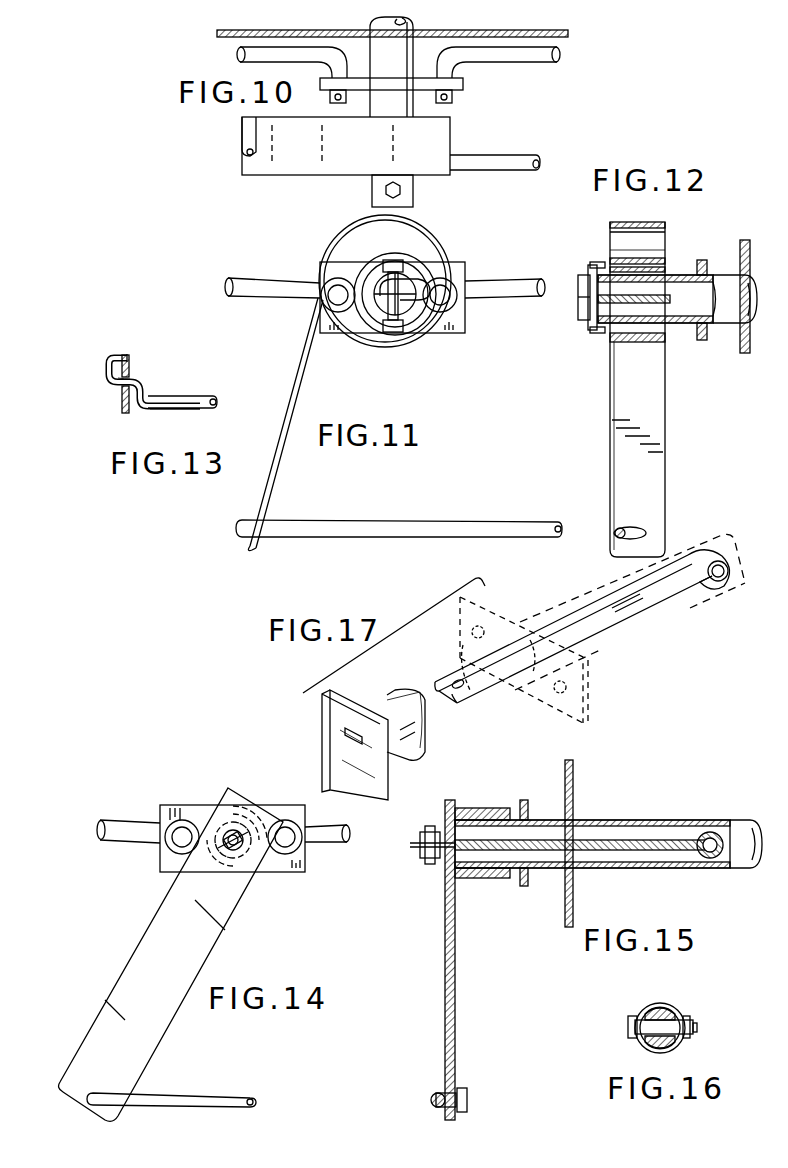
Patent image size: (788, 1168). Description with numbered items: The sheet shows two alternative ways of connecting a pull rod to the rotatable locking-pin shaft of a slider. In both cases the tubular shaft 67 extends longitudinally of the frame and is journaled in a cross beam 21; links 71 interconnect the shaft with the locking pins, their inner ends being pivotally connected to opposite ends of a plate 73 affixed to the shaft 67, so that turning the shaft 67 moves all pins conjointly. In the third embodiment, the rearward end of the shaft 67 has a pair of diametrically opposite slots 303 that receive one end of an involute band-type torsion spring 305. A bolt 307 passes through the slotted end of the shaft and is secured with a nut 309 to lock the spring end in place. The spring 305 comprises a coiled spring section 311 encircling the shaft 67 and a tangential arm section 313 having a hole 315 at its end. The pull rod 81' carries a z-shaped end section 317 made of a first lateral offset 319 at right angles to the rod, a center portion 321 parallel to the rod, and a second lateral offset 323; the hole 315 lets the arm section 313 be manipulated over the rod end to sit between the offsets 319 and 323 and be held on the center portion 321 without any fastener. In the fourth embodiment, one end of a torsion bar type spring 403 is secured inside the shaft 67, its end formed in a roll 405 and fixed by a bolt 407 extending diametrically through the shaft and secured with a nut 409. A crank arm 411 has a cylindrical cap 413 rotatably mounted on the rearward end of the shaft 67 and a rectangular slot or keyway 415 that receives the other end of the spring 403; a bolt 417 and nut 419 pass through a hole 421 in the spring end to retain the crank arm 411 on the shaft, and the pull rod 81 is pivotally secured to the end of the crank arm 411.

In FIG. 10, the cross beam 21 is at (555, 35).
In FIG. 12, the cross beam 21 is at (745, 353).
In FIG. 17, the cross beam 21 is at (575, 792).
In FIG. 15, the cross beam 21 is at (574, 792).
In FIG. 10, the shaft 67 is at (395, 40).
In FIG. 17, the shaft 67 is at (598, 652).
In FIG. 15, the shaft 67 is at (628, 820).
In FIG. 16, the shaft 67 is at (662, 1003).
In FIG. 10, the link 71 is at (238, 53).
In FIG. 11, the link 71 is at (266, 280).
In FIG. 14, the link 71 is at (124, 820).
In FIG. 10, the plate 73 is at (460, 86).
In FIG. 11, the plate 73 is at (460, 320).
In FIG. 12, the plate 73 is at (702, 340).
In FIG. 17, the plate 73 is at (582, 716).
In FIG. 14, the plate 73 is at (172, 805).
In FIG. 15, the plate 73 is at (526, 886).
In FIG. 14, the pull rod 81 is at (171, 1083).
In FIG. 15, the pull rod 81 is at (424, 1102).
In FIG. 10, the pull rod 81' is at (512, 153).
In FIG. 11, the pull rod 81' is at (399, 514).
In FIG. 12, the pull rod 81' is at (597, 522).
In FIG. 13, the pull rod 81' is at (199, 393).
In FIG. 11, the slot 303 is at (372, 314).
In FIG. 12, the slot 303 is at (596, 300).
In FIG. 10, the involute band-type torsion spring 305 is at (305, 162).
In FIG. 11, the involute band-type torsion spring 305 is at (296, 360).
In FIG. 12, the involute band-type torsion spring 305 is at (610, 362).
In FIG. 10, the bolt 307 is at (400, 190).
In FIG. 11, the bolt 307 is at (403, 262).
In FIG. 12, the bolt 307 is at (590, 268).
In FIG. 11, the nut 309 is at (400, 320).
In FIG. 11, the coiled spring section 311 is at (432, 268).
In FIG. 12, the coiled spring section 311 is at (664, 223).
In FIG. 11, the tangential arm section 313 is at (270, 494).
In FIG. 12, the tangential arm section 313 is at (615, 462).
In FIG. 13, the tangential arm section 313 is at (132, 362).
In FIG. 10, the hole 315 is at (243, 155).
In FIG. 12, the hole 315 is at (644, 530).
In FIG. 13, the hole 315 is at (125, 413).
In FIG. 13, the z-shaped end section 317 is at (96, 372).
In FIG. 13, the first lateral offset 319 is at (152, 396).
In FIG. 13, the center portion 321 is at (136, 380).
In FIG. 10, the second lateral offset 323 is at (244, 128).
In FIG. 13, the second lateral offset 323 is at (106, 354).
In FIG. 17, the torsion bar type spring 403 is at (640, 615).
In FIG. 14, the torsion bar type spring 403 is at (243, 852).
In FIG. 15, the torsion bar type spring 403 is at (667, 852).
In FIG. 17, the roll 405 is at (730, 584).
In FIG. 15, the roll 405 is at (714, 832).
In FIG. 16, the roll 405 is at (675, 1046).
In FIG. 15, the bolt 407 is at (714, 858).
In FIG. 16, the bolt 407 is at (630, 1028).
In FIG. 16, the nut 409 is at (687, 1018).
In FIG. 17, the crank arm 411 is at (332, 752).
In FIG. 14, the crank arm 411 is at (142, 975).
In FIG. 15, the crank arm 411 is at (445, 962).
In FIG. 17, the cylindrical cap 413 is at (398, 704).
In FIG. 15, the cylindrical cap 413 is at (490, 808).
In FIG. 17, the rectangular slot or keyway 415 is at (346, 732).
In FIG. 14, the bolt 417 is at (248, 828).
In FIG. 15, the bolt 417 is at (425, 832).
In FIG. 14, the nut 419 is at (240, 855).
In FIG. 15, the nut 419 is at (428, 862).
In FIG. 17, the hole 421 is at (470, 700).